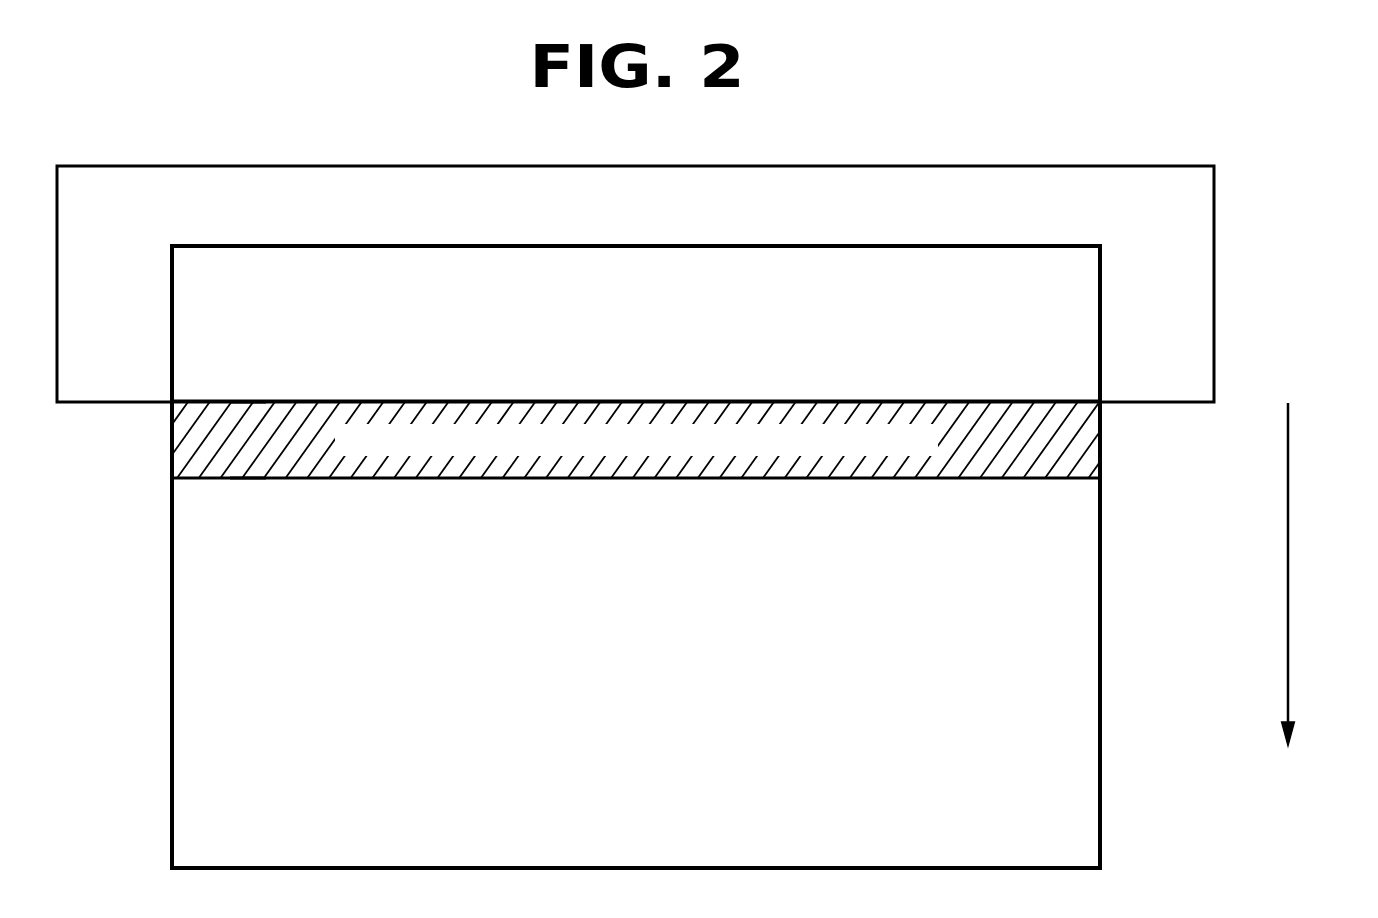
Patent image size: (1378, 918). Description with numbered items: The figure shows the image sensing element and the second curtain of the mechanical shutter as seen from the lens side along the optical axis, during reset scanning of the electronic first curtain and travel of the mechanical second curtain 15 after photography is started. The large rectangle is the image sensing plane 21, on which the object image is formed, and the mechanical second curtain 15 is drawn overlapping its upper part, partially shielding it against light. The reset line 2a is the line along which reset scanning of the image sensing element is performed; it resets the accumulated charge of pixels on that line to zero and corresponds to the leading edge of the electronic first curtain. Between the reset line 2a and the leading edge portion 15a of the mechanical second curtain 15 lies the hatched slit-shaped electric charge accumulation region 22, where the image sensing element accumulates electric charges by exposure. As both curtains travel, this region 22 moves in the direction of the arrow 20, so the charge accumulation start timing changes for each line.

The mechanical second curtain 15 is at (1200, 286).
The leading edge portion of the mechanical second curtain 15a is at (248, 400).
The electric charge accumulation region 22 is at (1088, 443).
The reset line 2a is at (248, 480).
The image sensing plane 21 is at (1088, 676).
The arrow 20 is at (1290, 557).